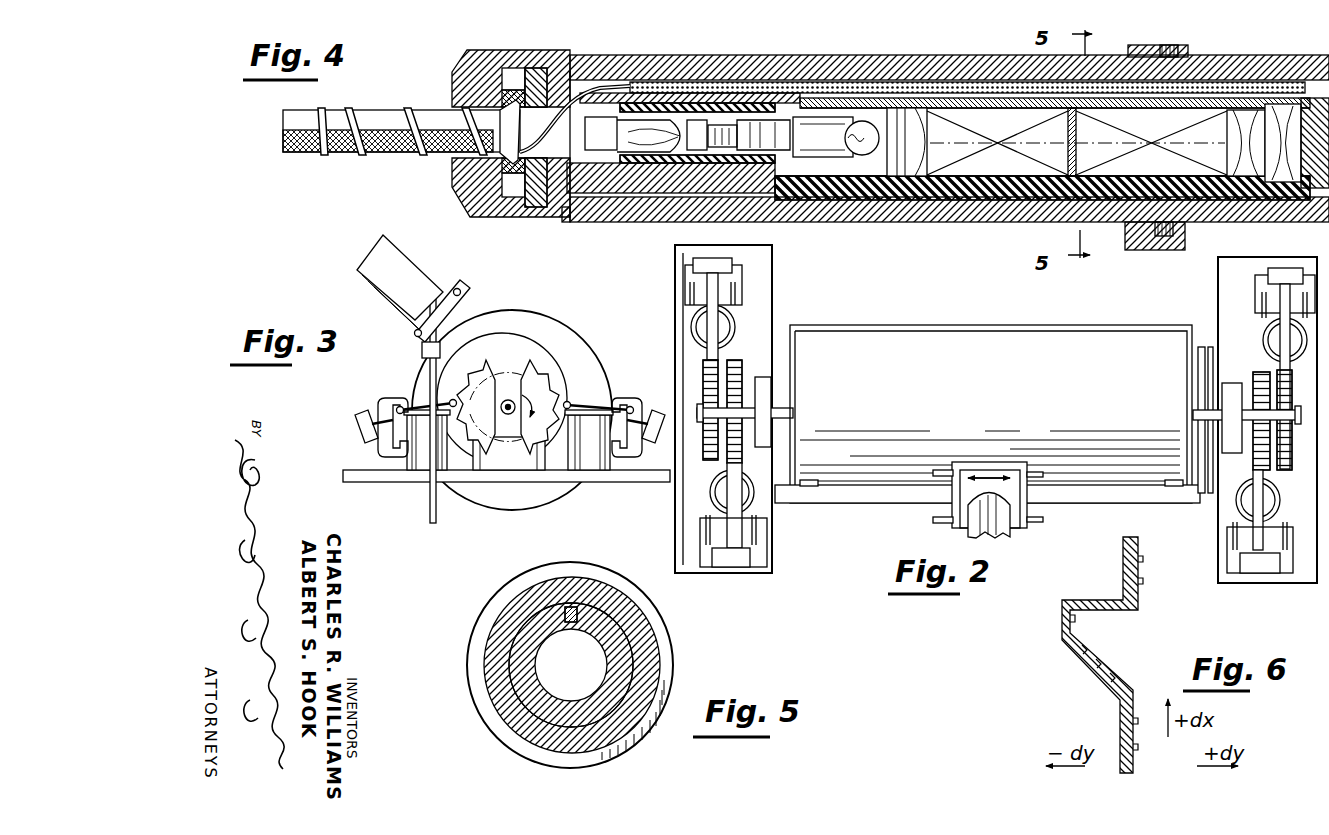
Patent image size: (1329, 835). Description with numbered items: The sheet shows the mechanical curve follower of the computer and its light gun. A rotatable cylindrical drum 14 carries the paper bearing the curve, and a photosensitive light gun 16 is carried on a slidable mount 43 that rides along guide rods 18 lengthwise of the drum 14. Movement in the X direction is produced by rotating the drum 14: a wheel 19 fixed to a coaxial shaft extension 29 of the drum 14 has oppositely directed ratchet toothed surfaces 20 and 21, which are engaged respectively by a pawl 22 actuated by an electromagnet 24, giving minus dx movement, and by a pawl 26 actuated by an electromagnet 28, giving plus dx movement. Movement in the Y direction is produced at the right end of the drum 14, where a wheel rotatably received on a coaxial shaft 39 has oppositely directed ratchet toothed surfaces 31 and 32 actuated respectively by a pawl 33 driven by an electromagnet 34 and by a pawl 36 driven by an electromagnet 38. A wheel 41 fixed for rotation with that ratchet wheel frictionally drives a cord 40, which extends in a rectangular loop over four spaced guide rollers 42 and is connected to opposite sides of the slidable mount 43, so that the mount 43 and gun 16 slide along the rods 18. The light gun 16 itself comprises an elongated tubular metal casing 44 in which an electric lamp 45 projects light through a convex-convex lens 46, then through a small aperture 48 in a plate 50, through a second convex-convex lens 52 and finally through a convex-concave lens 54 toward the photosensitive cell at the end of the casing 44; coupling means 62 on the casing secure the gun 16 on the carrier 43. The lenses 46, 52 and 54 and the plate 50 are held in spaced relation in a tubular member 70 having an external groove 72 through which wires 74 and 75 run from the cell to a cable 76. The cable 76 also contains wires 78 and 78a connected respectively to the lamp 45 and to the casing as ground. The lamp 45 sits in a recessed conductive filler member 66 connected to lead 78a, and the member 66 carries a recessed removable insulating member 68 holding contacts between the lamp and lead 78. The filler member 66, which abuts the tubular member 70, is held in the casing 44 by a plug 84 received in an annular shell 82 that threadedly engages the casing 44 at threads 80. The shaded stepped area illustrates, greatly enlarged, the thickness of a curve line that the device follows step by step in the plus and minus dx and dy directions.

In FIG. 3, the cylindrical rotatable drum 14 is at (572, 322).
In FIG. 2, the cylindrical rotatable drum 14 is at (962, 330).
In FIG. 4, the light gun 16 is at (823, 55).
In FIG. 3, the light gun 16 is at (420, 262).
In FIG. 2, the light gun 16 is at (1004, 526).
In FIG. 3, the guide rods 18 is at (458, 287).
In FIG. 2, the guide rods 18 is at (1036, 470).
In FIG. 2, the wheel 19 is at (688, 386).
In FIG. 2, the ratchet toothed surface 20 is at (706, 460).
In FIG. 2, the ratchet toothed surface 21 is at (734, 366).
In FIG. 2, the pawl 22 is at (722, 330).
In FIG. 2, the electromagnet 24 is at (690, 335).
In FIG. 2, the pawl 26 is at (741, 488).
In FIG. 2, the electromagnet 28 is at (728, 497).
In FIG. 2, the coaxial shaft extension 29 is at (760, 410).
In FIG. 3, the ratchet toothed surface 31 is at (566, 376).
In FIG. 2, the ratchet toothed surface 31 is at (1296, 385).
In FIG. 3, the ratchet toothed surface 32 is at (470, 372).
In FIG. 2, the ratchet toothed surface 32 is at (1258, 375).
In FIG. 2, the pawl 33 is at (1272, 346).
In FIG. 3, the electromagnet 34 is at (612, 402).
In FIG. 2, the electromagnet 34 is at (1264, 338).
In FIG. 3, the pawl 36 is at (414, 396).
In FIG. 2, the pawl 36 is at (1274, 498).
In FIG. 3, the electromagnet 38 is at (418, 472).
In FIG. 2, the electromagnet 38 is at (1268, 506).
In FIG. 3, the shaft 39 is at (504, 400).
In FIG. 2, the shaft 39 is at (1300, 412).
In FIG. 3, the cord 40 is at (420, 352).
In FIG. 2, the cord 40 is at (835, 483).
In FIG. 2, the wheel 41 is at (1196, 392).
In FIG. 3, the guide rollers 42 is at (447, 332).
In FIG. 2, the guide rollers 42 is at (815, 480).
In FIG. 5, the guide rollers 42 is at (629, 733).
In FIG. 3, the slidable mount 43 is at (454, 283).
In FIG. 2, the slidable mount 43 is at (969, 462).
In FIG. 4, the tubular metal casing 44 is at (985, 215).
In FIG. 4, the electric lamp 45 is at (855, 137).
In FIG. 4, the convex-convex lens 46 is at (926, 140).
In FIG. 4, the aperture 48 is at (1078, 148).
In FIG. 4, the plate 50 is at (1080, 137).
In FIG. 4, the convex-convex lens 52 is at (1216, 146).
In FIG. 5, the convex-convex lens 52 is at (594, 668).
In FIG. 4, the convex-concave lens 54 is at (1292, 100).
In FIG. 4, the coupling means 62 is at (1132, 254).
In FIG. 5, the coupling means 62 is at (668, 662).
In FIG. 4, the filler member 66 is at (628, 196).
In FIG. 4, the removable member 68 is at (697, 148).
In FIG. 4, the tubular member 70 is at (908, 206).
In FIG. 5, the tubular member 70 is at (654, 642).
In FIG. 4, the external groove 72 is at (1025, 100).
In FIG. 5, the external groove 72 is at (584, 614).
In FIG. 4, the wire 74 is at (585, 92).
In FIG. 5, the wire 74 is at (569, 607).
In FIG. 4, the wire 75 is at (687, 134).
In FIG. 5, the wire 75 is at (569, 625).
In FIG. 4, the cable 76 is at (397, 118).
In FIG. 4, the wire 78 is at (545, 137).
In FIG. 4, the wire 78a is at (525, 96).
In FIG. 4, the threads 80 is at (532, 222).
In FIG. 4, the annular shell 82 is at (452, 205).
In FIG. 4, the plug 84 is at (452, 178).